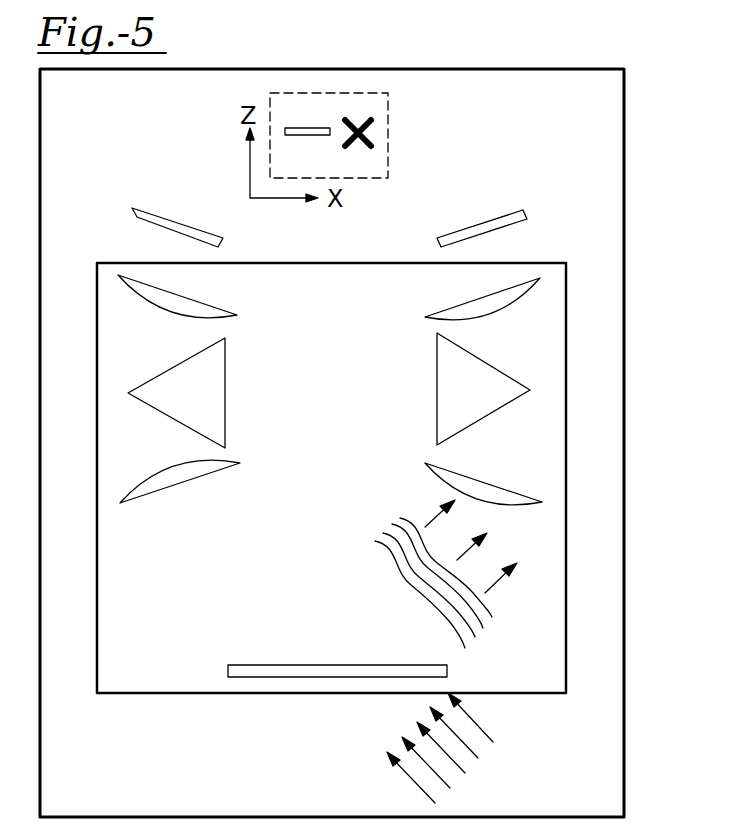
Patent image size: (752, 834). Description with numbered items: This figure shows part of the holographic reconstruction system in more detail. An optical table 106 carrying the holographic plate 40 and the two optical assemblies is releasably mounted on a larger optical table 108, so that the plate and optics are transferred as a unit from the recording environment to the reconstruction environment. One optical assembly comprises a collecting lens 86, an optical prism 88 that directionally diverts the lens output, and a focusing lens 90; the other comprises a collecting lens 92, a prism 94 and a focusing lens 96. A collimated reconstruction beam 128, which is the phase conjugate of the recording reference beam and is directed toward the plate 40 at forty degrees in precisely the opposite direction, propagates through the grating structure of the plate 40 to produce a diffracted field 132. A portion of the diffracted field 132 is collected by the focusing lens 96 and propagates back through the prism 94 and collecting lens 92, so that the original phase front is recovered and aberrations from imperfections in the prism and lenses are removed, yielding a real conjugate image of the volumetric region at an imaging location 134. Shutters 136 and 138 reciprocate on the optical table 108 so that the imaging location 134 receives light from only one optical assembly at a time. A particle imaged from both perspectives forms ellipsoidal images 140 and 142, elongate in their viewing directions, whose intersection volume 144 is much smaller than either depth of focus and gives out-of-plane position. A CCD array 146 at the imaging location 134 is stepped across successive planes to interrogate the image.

The holographic plate 40 is at (258, 664).
The collecting lens 86 is at (173, 306).
The optical prism 88 is at (176, 419).
The focusing lens 90 is at (172, 499).
The collecting lens 92 is at (488, 309).
The prism 94 is at (493, 414).
The focusing lens 96 is at (489, 468).
The optical table 106 is at (567, 341).
The optical table 108 is at (626, 546).
The reconstruction beam 128 is at (487, 734).
The diffracted field 132 is at (492, 615).
The imaging location 134 is at (389, 177).
The shutter 136 is at (164, 212).
The shutter 138 is at (505, 211).
The image 140 is at (346, 147).
The image 142 is at (368, 143).
The intersection volume 144 is at (362, 121).
The CCD array 146 is at (298, 127).